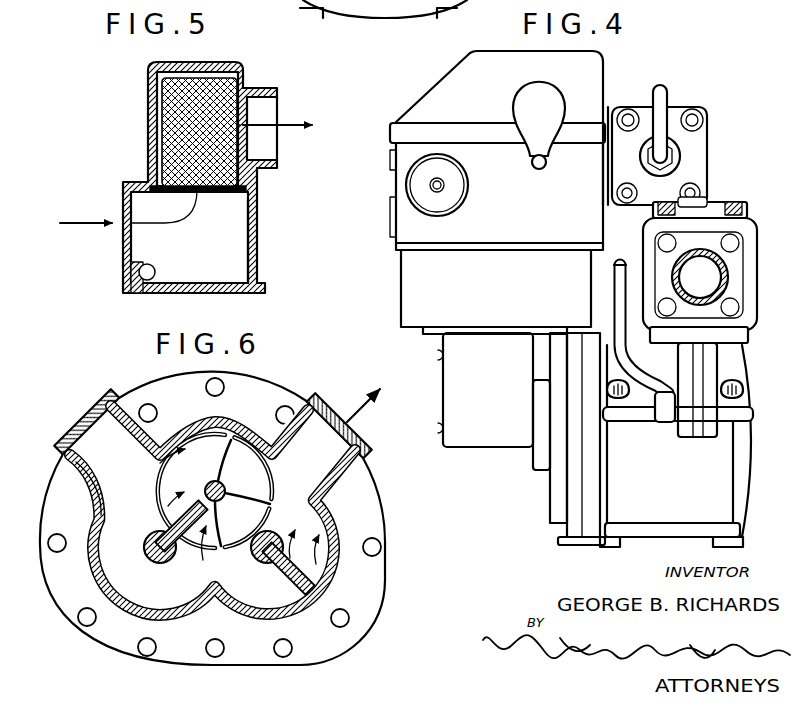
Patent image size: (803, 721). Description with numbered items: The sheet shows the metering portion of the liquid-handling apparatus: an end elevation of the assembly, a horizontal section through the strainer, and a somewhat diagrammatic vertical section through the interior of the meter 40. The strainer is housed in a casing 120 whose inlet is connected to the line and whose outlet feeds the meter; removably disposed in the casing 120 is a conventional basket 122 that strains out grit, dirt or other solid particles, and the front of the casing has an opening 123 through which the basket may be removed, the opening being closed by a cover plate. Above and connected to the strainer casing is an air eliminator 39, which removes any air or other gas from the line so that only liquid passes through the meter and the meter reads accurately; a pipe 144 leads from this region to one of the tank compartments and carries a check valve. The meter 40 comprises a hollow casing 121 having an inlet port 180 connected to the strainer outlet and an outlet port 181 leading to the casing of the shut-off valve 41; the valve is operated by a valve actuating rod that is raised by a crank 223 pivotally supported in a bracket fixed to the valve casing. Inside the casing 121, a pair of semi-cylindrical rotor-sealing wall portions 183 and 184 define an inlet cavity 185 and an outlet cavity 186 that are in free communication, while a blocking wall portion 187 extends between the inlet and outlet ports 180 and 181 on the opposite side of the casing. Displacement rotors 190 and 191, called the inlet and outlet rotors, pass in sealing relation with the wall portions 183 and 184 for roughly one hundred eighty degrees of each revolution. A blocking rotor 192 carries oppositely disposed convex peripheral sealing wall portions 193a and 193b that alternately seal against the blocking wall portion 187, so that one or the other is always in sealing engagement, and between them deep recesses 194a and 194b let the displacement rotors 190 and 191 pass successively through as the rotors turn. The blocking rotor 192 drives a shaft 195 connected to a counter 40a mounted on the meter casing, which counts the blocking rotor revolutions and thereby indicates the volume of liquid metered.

In FIG. 4, the meter 40 is at (397, 0).
In FIG. 4, the counter 40a is at (410, 107).
In FIG. 4, the air eliminator 39 is at (684, 101).
In FIG. 4, the pipe 144 is at (664, 88).
In FIG. 4, the shut-off valve 41 is at (744, 227).
In FIG. 4, the crank 223 is at (611, 290).
In FIG. 5, the casing 120 is at (258, 221).
In FIG. 5, the basket 122 is at (172, 100).
In FIG. 5, the opening 123 is at (243, 270).
In FIG. 6, the casing 121 is at (380, 568).
In FIG. 6, the inlet port 180 is at (95, 424).
In FIG. 6, the outlet port 181 is at (343, 445).
In FIG. 6, the inlet cavity 185 is at (103, 540).
In FIG. 6, the outlet cavity 186 is at (358, 606).
In FIG. 6, the blocking wall portion 187 is at (222, 438).
In FIG. 6, the displacement rotor 190 is at (176, 533).
In FIG. 6, the displacement rotor 191 is at (278, 537).
In FIG. 6, the blocking rotor 192 is at (276, 492).
In FIG. 6, the peripheral sealing wall portion 193a is at (162, 483).
In FIG. 6, the peripheral sealing wall portion 193b is at (218, 550).
In FIG. 6, the recess 194a is at (197, 504).
In FIG. 6, the recess 194b is at (241, 482).
In FIG. 6, the shaft 195 is at (224, 502).
In FIG. 6, the rotor-sealing wall portion 183 is at (104, 584).
In FIG. 6, the rotor-sealing wall portion 184 is at (272, 610).